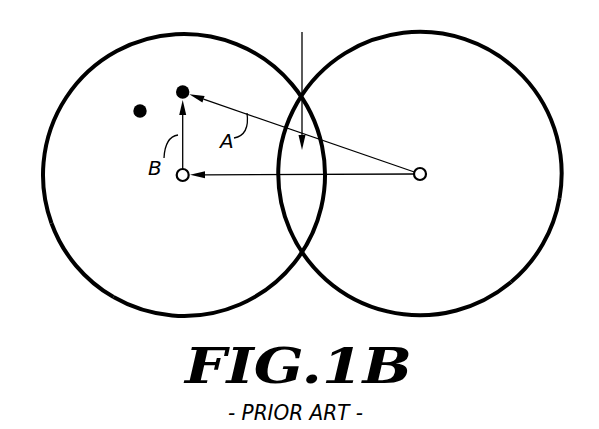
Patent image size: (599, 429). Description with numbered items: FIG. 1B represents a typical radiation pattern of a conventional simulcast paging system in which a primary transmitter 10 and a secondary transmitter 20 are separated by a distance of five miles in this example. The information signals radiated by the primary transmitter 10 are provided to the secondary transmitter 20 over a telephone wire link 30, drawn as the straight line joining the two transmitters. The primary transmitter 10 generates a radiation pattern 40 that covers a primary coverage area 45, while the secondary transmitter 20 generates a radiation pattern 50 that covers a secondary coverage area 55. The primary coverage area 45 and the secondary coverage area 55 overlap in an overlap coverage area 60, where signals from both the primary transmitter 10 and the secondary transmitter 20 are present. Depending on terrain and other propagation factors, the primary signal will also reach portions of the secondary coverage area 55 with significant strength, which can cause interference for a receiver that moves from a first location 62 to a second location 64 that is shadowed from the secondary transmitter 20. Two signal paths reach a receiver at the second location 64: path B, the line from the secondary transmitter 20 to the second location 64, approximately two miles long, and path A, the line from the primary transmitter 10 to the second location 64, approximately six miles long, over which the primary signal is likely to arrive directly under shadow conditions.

The primary transmitter 10 is at (422, 166).
The secondary transmitter 20 is at (187, 184).
The telephone wire link 30 is at (378, 178).
The radiation pattern 40 is at (455, 313).
The primary coverage area 45 is at (518, 250).
The radiation pattern 50 is at (177, 318).
The secondary coverage area 55 is at (92, 253).
The overlap coverage area 60 is at (302, 79).
The first location 62 is at (133, 110).
The second location 64 is at (187, 84).